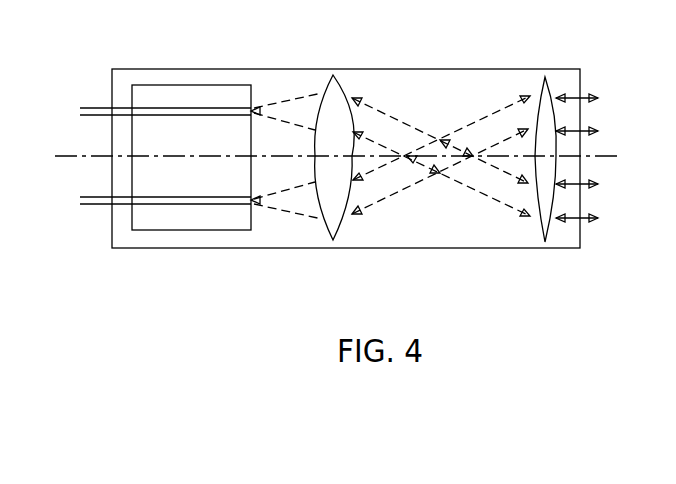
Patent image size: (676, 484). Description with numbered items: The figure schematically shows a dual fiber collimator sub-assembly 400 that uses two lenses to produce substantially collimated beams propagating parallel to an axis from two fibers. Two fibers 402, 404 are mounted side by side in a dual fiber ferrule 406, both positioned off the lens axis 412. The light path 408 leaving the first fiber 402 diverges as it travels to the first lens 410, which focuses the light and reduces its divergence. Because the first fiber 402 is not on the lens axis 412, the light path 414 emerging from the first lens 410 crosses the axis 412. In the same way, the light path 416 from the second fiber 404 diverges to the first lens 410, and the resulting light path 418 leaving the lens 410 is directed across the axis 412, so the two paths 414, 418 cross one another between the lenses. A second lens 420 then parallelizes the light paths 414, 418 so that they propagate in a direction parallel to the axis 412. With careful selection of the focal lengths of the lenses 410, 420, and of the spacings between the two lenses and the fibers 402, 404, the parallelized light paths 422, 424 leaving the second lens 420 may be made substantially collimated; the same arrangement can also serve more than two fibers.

The collimator sub-assembly 400 is at (194, 69).
The first fiber 402 is at (97, 108).
The second fiber 404 is at (97, 205).
The dual fiber ferrule 406 is at (186, 231).
The light path from the first fiber 408 is at (287, 103).
The first lens 410 is at (338, 88).
The lens axis 412 is at (65, 158).
The light path emerging from the first lens 414 is at (382, 112).
The light path from the second fiber 416 is at (287, 212).
The light path from the lens for the second fiber 418 is at (495, 115).
The second lens 420 is at (548, 72).
The parallelized light path 422 is at (588, 224).
The parallelized light path 424 is at (594, 88).